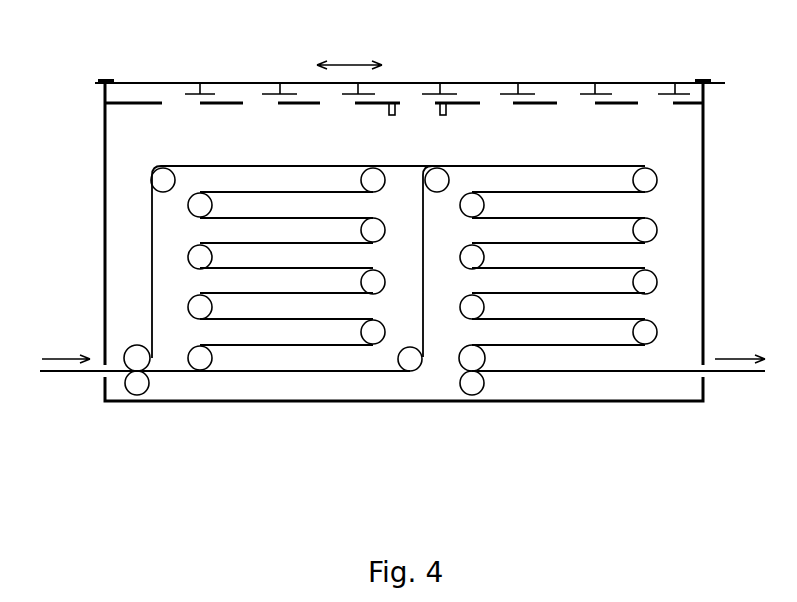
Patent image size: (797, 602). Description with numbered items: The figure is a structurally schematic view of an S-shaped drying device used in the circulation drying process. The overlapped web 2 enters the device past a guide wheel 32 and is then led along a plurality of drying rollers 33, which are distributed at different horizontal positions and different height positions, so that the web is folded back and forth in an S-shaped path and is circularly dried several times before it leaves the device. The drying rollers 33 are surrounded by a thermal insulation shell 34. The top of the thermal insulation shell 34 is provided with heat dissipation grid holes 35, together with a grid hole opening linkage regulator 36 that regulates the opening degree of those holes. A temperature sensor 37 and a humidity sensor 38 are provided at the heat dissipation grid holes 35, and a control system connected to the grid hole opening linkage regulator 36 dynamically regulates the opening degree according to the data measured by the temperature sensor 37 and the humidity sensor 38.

The overlapped web 2 is at (90, 373).
The guide wheel 32 is at (137, 383).
The drying roller 33 is at (200, 360).
The thermal insulation shell 34 is at (707, 157).
The heat dissipation grid holes 35 is at (492, 91).
The grid hole opening linkage regulator 36 is at (162, 82).
The temperature sensor 37 is at (395, 100).
The humidity sensor 38 is at (443, 100).